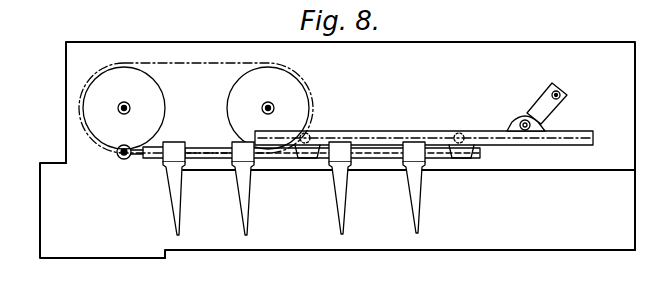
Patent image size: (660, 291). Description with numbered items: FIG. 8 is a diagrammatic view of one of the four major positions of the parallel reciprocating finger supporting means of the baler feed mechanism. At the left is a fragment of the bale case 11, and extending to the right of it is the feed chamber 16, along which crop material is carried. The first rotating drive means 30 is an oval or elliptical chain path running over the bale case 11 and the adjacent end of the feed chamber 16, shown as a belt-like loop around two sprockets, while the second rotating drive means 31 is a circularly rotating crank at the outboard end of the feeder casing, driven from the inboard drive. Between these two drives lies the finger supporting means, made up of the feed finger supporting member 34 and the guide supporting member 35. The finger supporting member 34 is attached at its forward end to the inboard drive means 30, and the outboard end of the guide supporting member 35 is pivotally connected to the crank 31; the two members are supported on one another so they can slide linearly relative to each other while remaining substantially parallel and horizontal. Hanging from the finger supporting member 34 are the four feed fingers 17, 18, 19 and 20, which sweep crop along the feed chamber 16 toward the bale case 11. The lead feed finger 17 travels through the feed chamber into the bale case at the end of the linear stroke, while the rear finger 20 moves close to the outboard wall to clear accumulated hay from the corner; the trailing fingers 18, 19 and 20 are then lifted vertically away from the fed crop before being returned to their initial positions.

The bale case 11 is at (132, 230).
The feed chamber 16 is at (473, 240).
The lead feed finger 17 is at (180, 190).
The feed finger 18 is at (250, 188).
The feed finger 19 is at (346, 188).
The rear feed finger 20 is at (425, 188).
The first rotating drive means 30 is at (213, 63).
The second rotating drive means 31 is at (522, 97).
The feed finger supporting member 34 is at (200, 146).
The guide supporting member 35 is at (402, 134).